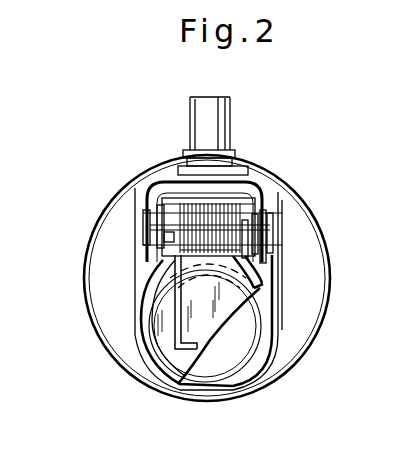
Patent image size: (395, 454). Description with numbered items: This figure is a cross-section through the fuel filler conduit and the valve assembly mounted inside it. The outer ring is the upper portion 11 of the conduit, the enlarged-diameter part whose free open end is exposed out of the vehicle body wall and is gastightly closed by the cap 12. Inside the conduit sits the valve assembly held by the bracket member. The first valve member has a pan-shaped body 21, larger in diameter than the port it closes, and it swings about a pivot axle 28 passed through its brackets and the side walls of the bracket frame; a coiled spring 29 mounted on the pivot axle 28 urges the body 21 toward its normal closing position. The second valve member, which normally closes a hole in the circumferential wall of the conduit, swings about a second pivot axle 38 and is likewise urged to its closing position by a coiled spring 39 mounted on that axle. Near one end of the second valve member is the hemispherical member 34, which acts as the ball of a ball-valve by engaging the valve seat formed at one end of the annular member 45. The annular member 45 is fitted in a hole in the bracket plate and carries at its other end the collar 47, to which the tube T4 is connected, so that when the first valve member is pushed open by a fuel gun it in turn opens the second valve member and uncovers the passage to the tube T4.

The upper portion 11 is at (324, 331).
The cap 12 is at (233, 368).
The pan-shaped body 21 is at (172, 328).
The pivot axle 28 is at (262, 220).
The coiled spring 29 is at (250, 210).
The hemispherical member 34 is at (195, 190).
The pivot axle 38 is at (262, 246).
The coiled spring 39 is at (264, 262).
The annular member 45 is at (235, 168).
The collar 47 is at (230, 148).
The tube T4 is at (218, 112).